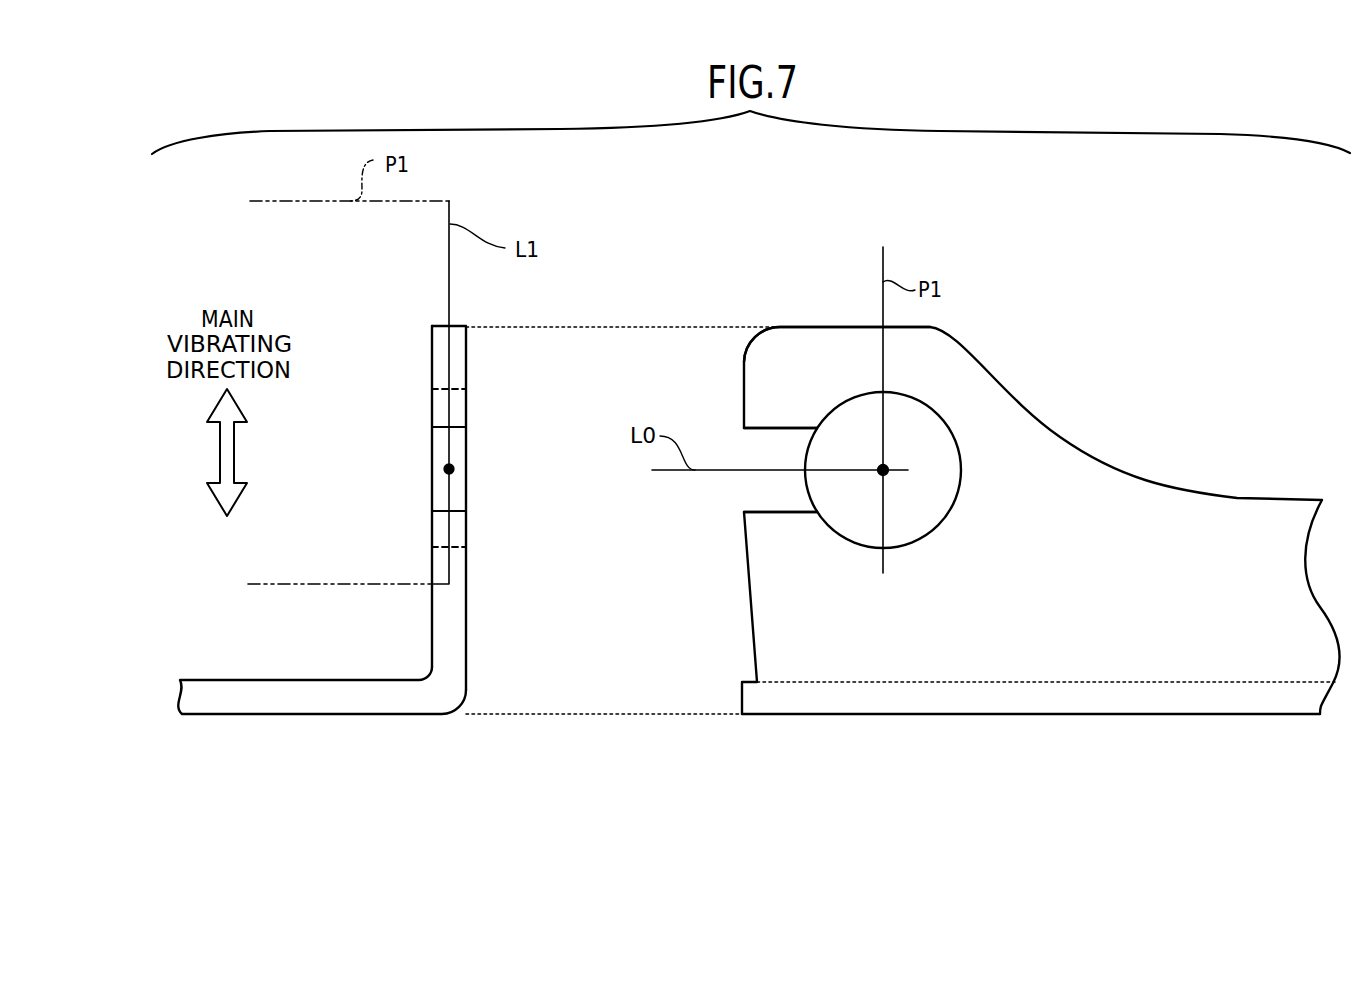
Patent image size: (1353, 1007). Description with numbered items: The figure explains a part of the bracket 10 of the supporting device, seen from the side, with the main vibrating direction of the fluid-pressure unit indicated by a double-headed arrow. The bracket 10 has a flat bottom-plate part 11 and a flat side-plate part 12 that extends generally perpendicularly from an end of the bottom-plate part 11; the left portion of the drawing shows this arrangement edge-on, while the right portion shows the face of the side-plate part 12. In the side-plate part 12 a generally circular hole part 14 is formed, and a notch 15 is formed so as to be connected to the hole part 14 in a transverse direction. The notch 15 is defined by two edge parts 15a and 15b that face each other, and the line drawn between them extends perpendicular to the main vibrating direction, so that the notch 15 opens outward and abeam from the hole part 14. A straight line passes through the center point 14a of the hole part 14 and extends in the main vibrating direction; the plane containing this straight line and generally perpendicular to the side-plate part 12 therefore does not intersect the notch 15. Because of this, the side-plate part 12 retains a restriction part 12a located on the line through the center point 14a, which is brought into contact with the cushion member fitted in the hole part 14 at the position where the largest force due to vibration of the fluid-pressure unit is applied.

The bracket 10 is at (1158, 305).
The bottom-plate part 11 is at (343, 705).
The side-plate part 12 is at (447, 630).
The restriction part 12a is at (840, 347).
The hole part 14 is at (457, 389).
The center point 14a is at (455, 470).
The notch 15 is at (436, 482).
The edge part 15a is at (778, 512).
The edge part 15b is at (775, 428).